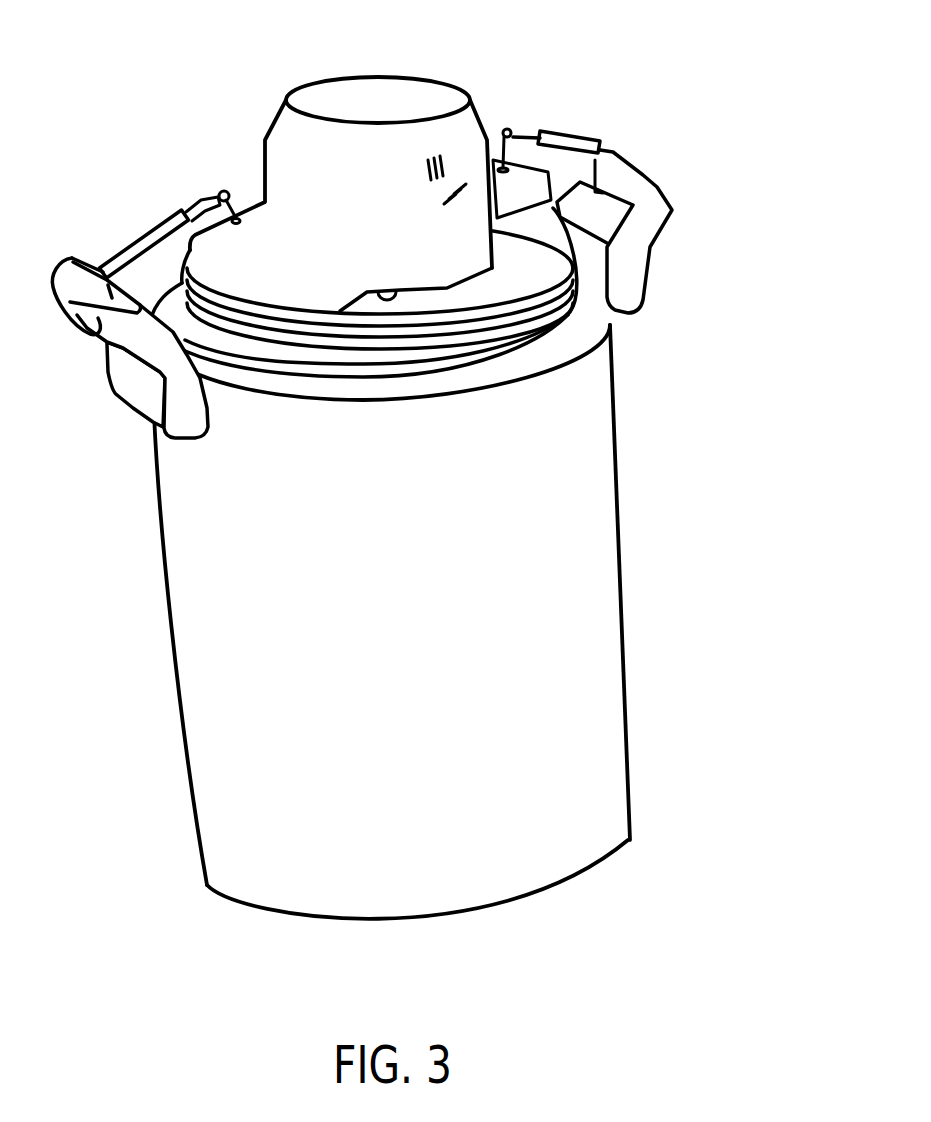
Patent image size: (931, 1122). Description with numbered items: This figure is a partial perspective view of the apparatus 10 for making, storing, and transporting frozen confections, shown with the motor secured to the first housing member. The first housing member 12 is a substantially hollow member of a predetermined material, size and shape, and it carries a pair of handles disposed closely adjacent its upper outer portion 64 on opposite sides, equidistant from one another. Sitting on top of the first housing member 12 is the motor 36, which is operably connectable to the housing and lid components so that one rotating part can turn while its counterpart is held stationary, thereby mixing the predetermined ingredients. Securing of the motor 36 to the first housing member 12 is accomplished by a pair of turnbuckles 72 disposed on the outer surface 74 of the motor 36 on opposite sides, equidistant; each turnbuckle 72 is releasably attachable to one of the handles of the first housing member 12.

The apparatus 10 is at (692, 140).
The first housing member 12 is at (553, 508).
The motor 36 is at (387, 93).
The upper outer portion 64 is at (583, 361).
The turnbuckles 72 is at (127, 247).
The outer surface 74 is at (257, 217).